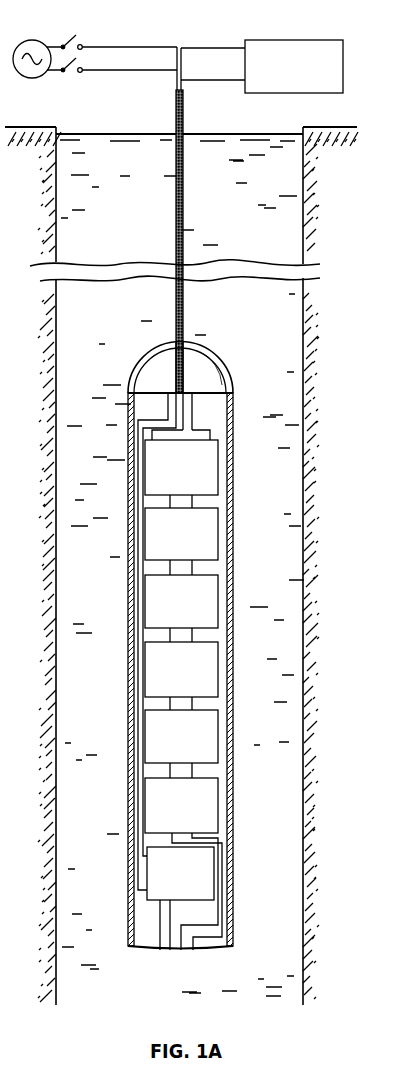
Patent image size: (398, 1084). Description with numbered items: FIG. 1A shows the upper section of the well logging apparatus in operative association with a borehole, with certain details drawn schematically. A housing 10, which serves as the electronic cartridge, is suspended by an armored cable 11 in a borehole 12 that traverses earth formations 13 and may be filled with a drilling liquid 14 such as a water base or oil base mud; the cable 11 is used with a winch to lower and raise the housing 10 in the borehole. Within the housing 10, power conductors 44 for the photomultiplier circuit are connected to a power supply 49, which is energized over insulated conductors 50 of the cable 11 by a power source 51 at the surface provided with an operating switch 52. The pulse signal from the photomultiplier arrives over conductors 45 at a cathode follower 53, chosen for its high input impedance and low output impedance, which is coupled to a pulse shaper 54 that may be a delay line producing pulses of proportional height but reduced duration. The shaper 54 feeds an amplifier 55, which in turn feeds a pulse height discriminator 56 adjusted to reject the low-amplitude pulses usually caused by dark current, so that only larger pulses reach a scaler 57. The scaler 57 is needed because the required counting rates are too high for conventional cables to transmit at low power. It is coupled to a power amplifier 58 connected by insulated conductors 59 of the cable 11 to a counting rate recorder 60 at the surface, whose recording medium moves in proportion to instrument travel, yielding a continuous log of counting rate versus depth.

The housing 10 is at (215, 356).
The armored cable 11 is at (185, 116).
The borehole 12 is at (303, 132).
The earth formations 13 is at (336, 193).
The drilling liquid 14 is at (126, 169).
The power conductors 44 is at (162, 943).
The conductors 45 is at (194, 944).
The power supply 49 is at (214, 883).
The insulated conductors 50 is at (106, 70).
The power source 51 is at (30, 40).
The operating switch 52 is at (72, 44).
The cathode follower 53 is at (218, 816).
The pulse shaper 54 is at (218, 748).
The amplifier 55 is at (218, 672).
The pulse height discriminator 56 is at (218, 618).
The scaler 57 is at (218, 546).
The power amplifier 58 is at (218, 467).
The insulated conductors 59 is at (189, 427).
The counting rate recorder 60 is at (280, 40).